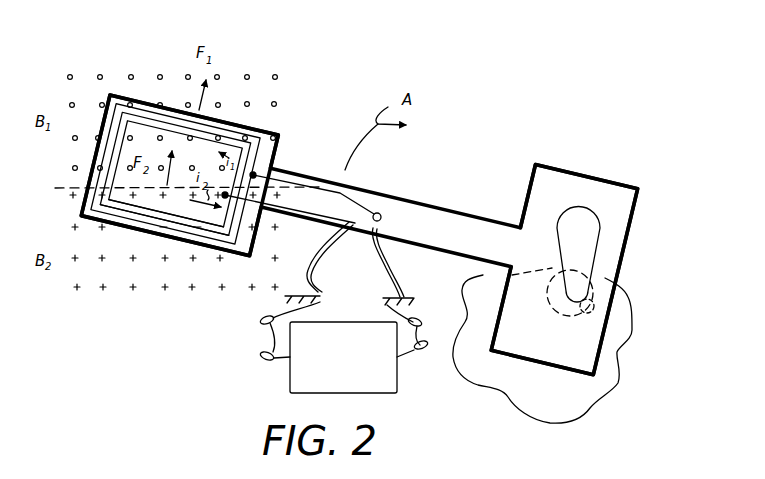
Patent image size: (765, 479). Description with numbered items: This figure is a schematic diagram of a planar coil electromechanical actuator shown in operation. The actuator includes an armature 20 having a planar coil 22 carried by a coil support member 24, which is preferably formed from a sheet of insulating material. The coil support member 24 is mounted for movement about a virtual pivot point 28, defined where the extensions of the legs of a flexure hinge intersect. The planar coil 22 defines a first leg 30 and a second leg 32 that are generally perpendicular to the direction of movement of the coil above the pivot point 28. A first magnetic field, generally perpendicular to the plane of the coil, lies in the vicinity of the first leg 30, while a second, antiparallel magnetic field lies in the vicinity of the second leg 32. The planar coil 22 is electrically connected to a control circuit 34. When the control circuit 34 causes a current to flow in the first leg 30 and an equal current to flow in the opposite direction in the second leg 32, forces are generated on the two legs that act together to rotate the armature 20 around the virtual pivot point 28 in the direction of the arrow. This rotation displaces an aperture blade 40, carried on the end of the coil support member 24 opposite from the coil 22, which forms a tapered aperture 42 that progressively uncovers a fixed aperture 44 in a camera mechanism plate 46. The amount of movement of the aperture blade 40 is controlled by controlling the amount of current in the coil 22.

The armature 20 is at (301, 156).
The planar coil 22 is at (98, 180).
The coil support member 24 is at (118, 96).
The virtual pivot point 28 is at (392, 228).
The first leg 30 is at (205, 143).
The second leg 32 is at (184, 212).
The control circuit 34 is at (352, 369).
The aperture blade 40 is at (563, 177).
The tapered aperture 42 is at (600, 228).
The fixed aperture 44 is at (612, 301).
The camera mechanism plate 46 is at (613, 350).